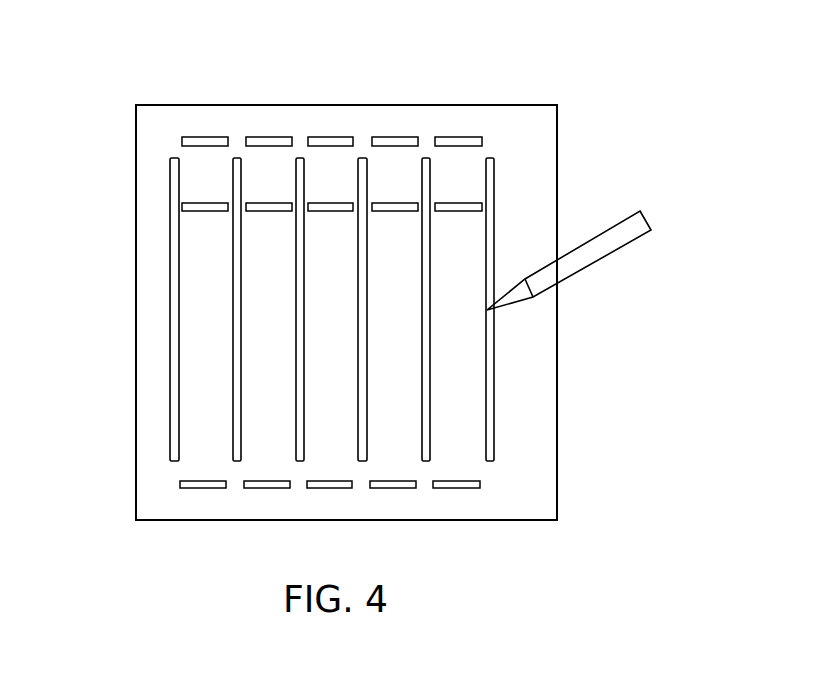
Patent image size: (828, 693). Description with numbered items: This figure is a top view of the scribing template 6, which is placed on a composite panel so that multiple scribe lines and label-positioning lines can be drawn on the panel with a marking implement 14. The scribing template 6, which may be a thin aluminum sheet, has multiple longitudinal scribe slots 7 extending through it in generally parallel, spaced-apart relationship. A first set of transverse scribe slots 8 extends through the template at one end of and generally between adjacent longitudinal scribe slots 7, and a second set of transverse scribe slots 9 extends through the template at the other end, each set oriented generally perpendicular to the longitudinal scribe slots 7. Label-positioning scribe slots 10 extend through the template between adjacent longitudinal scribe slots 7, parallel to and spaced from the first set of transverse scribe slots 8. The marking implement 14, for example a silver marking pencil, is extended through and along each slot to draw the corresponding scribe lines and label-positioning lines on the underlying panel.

The scribing template 6 is at (158, 148).
The longitudinal scribe slots 7 is at (237, 382).
The first set of transverse scribe slots 8 is at (397, 143).
The second set of transverse scribe slots 9 is at (395, 487).
The label-positioning scribe slots 10 is at (265, 208).
The marking implement 14 is at (587, 252).